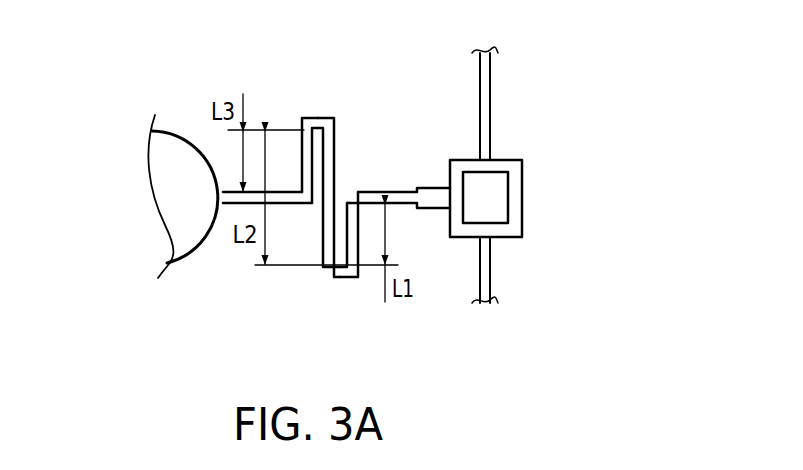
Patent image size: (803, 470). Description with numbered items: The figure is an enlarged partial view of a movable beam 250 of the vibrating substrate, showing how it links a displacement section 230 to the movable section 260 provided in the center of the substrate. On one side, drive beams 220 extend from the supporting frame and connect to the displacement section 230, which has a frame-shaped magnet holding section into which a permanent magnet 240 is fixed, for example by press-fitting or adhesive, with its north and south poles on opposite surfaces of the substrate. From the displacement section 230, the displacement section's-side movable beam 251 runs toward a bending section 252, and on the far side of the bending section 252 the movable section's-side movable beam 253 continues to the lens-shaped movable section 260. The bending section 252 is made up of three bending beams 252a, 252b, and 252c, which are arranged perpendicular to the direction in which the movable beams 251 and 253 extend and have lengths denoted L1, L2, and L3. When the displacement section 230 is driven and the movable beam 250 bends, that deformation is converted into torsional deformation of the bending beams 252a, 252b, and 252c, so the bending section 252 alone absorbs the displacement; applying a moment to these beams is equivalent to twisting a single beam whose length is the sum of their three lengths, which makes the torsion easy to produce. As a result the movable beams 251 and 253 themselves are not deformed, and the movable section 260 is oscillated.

The drive beam 220 is at (485, 82).
The displacement section 230 is at (523, 173).
The permanent magnet 240 is at (490, 205).
The movable beam 250 is at (235, 43).
The displacement section's-side movable beam 251 is at (375, 192).
The bending section 252 is at (290, 205).
The bending beam 252a is at (353, 255).
The bending beam 252b is at (327, 207).
The bending beam 252c is at (304, 163).
The movable section's-side movable beam 253 is at (281, 203).
The movable section 260 is at (160, 163).